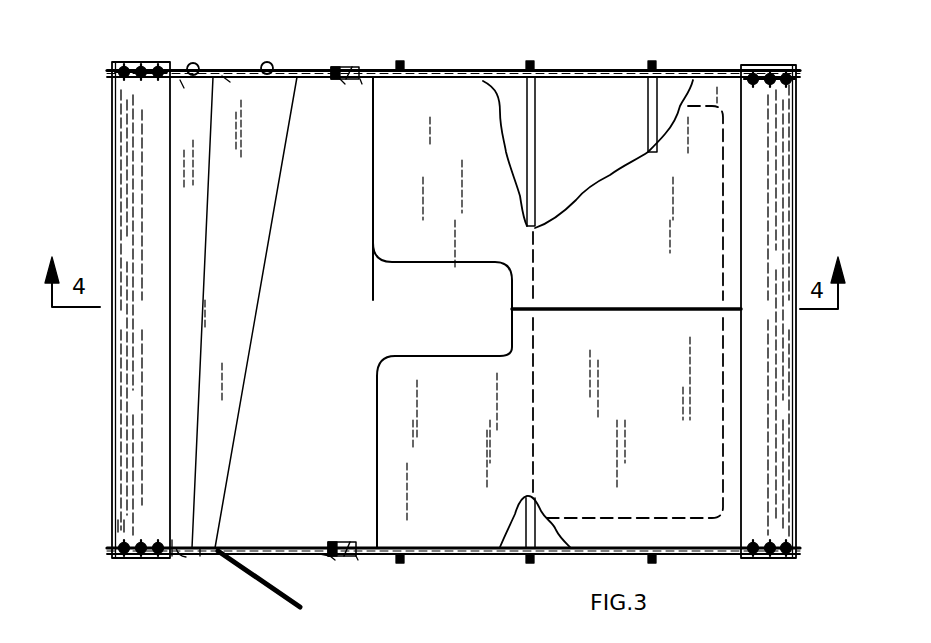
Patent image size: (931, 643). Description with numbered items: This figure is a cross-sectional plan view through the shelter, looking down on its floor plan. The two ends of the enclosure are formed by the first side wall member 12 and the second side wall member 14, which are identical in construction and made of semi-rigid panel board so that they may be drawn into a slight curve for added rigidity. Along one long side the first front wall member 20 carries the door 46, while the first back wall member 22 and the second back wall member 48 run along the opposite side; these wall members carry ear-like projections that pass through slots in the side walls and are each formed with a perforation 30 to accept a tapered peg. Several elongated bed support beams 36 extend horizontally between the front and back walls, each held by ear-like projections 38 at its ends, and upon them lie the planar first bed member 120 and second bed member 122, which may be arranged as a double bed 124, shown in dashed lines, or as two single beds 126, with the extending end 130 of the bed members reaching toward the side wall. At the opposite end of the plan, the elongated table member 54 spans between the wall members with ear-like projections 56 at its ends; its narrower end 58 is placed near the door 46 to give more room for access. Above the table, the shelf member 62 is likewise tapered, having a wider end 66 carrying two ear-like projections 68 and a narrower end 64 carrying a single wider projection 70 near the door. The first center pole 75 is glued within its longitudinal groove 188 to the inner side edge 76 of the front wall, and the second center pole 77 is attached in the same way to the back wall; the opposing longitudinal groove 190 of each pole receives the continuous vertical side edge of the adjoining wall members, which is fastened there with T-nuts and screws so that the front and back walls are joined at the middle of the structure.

The first side wall member 12 is at (783, 164).
The second side wall member 14 is at (121, 133).
The first front wall member 20 is at (472, 556).
The first back wall member 22 is at (712, 76).
The perforation 30 is at (302, 70).
The bed support beam 36 is at (532, 147).
The ear-like projection 38 is at (533, 64).
The door 46 is at (270, 586).
The second back wall member 48 is at (225, 72).
The table member 54 is at (265, 172).
The ear-like projection 56 is at (272, 64).
The narrower end 58 is at (203, 536).
The shelf member 62 is at (194, 297).
The narrower end 64 is at (186, 522).
The wider end 66 is at (182, 86).
The ear-like projection 68 is at (193, 63).
The projection 70 is at (182, 558).
The first center pole 75 is at (347, 556).
The inner side edge 76 is at (330, 556).
The second center pole 77 is at (352, 67).
The first bed member 120 is at (666, 369).
The second bed member 122 is at (648, 279).
The double bed 124 is at (533, 328).
The single bed 126 is at (380, 248).
The extending end 130 is at (397, 240).
The longitudinal groove 188 is at (340, 80).
The longitudinal groove 190 is at (362, 80).